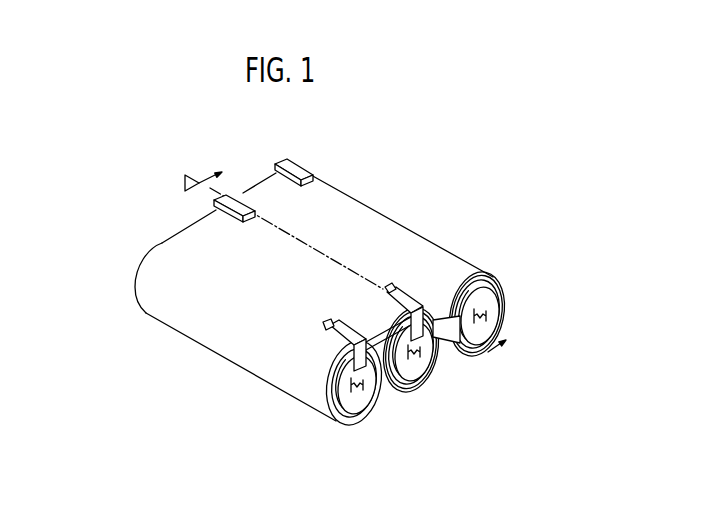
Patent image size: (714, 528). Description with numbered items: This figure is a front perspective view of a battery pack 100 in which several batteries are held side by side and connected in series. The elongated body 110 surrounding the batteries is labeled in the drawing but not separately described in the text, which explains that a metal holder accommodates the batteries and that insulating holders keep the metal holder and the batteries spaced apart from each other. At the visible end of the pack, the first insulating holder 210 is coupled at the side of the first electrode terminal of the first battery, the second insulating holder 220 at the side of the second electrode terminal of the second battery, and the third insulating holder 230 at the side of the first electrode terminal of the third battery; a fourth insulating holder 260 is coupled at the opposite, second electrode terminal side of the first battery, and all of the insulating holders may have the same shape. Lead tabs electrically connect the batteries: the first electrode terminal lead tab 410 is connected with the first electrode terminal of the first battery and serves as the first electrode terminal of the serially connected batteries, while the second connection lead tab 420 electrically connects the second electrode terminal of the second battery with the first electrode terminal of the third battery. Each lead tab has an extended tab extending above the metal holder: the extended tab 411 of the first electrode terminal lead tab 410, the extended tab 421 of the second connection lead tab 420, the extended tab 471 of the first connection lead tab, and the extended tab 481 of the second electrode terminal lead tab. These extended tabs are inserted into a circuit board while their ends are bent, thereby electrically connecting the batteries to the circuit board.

The battery pack 100 is at (322, 313).
The case 110 is at (278, 297).
The fourth insulating holder 260 is at (130, 273).
The first insulating holder 210 is at (354, 413).
The second insulating holder 220 is at (394, 398).
The third insulating holder 230 is at (511, 347).
The first electrode terminal lead tab 410 is at (357, 414).
The second connection lead tab 420 is at (502, 323).
The extended tab 411 is at (323, 334).
The extended tab 421 is at (397, 290).
The extended tab 471 is at (238, 198).
The extended tab 481 is at (300, 172).